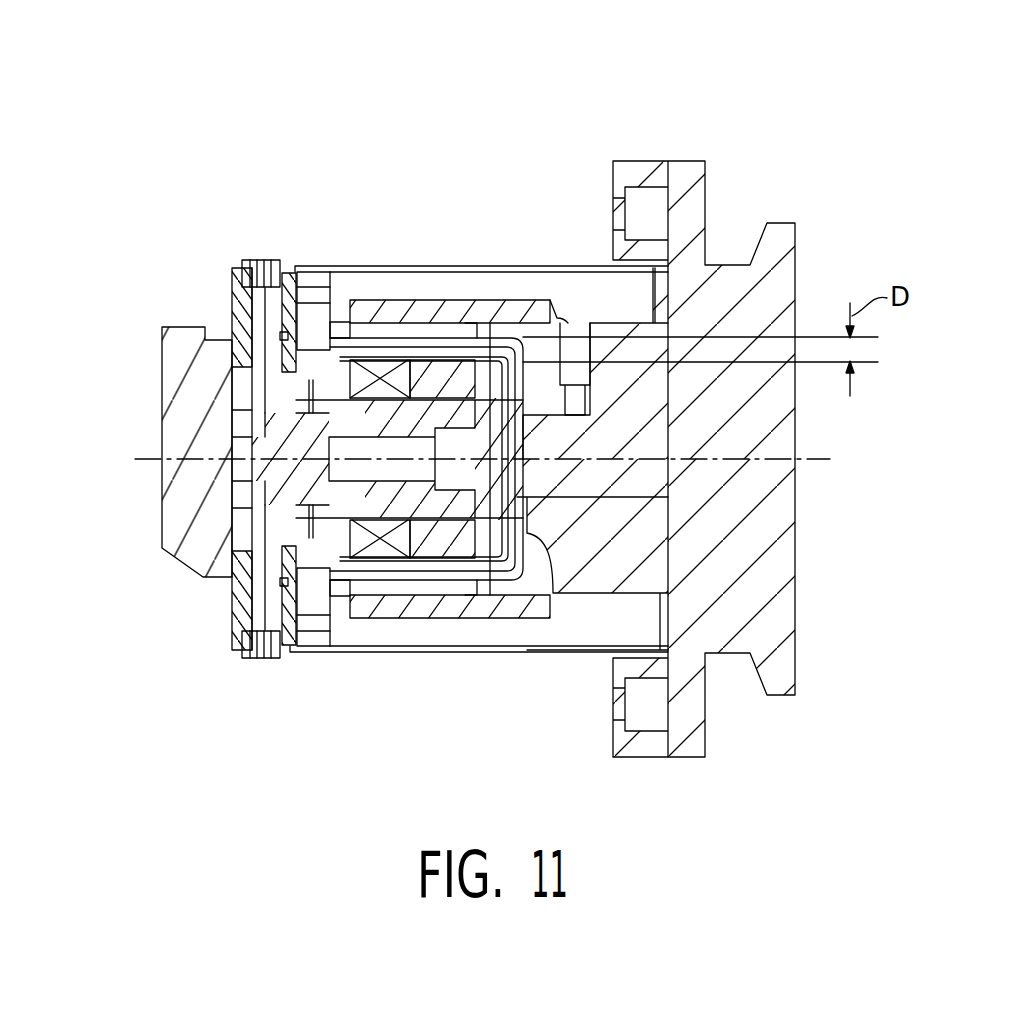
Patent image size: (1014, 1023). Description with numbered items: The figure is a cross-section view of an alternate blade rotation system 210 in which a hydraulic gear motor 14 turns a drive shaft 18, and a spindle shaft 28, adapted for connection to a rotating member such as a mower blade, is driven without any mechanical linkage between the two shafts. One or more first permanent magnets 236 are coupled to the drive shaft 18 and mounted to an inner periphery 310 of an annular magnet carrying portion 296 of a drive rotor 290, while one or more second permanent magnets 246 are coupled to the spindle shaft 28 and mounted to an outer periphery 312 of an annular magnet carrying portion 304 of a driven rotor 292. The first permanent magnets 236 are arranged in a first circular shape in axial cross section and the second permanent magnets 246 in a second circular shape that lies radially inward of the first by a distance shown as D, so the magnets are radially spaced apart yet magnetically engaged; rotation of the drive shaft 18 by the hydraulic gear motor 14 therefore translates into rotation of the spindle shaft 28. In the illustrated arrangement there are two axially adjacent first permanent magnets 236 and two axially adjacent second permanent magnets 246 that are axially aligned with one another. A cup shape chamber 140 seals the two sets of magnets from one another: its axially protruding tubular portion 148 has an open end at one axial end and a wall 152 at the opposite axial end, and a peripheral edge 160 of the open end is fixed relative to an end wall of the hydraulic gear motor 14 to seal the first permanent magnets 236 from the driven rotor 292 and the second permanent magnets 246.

The blade rotation system 210 is at (178, 75).
The hydraulic gear motor 14 is at (731, 264).
The drive shaft 18 is at (597, 497).
The spindle shaft 28 is at (345, 450).
The cup shape chamber 140 is at (510, 583).
The tubular portion 148 is at (340, 603).
The wall 152 is at (535, 498).
The peripheral edge 160 is at (265, 572).
The first permanent magnets 236 is at (428, 333).
The second permanent magnets 246 is at (433, 377).
The drive rotor 290 is at (388, 300).
The driven rotor 292 is at (353, 432).
The annular magnet carrying portion 296 is at (372, 312).
The annular magnet carrying portion 304 is at (372, 417).
The inner periphery 310 is at (352, 334).
The outer periphery 312 is at (385, 397).